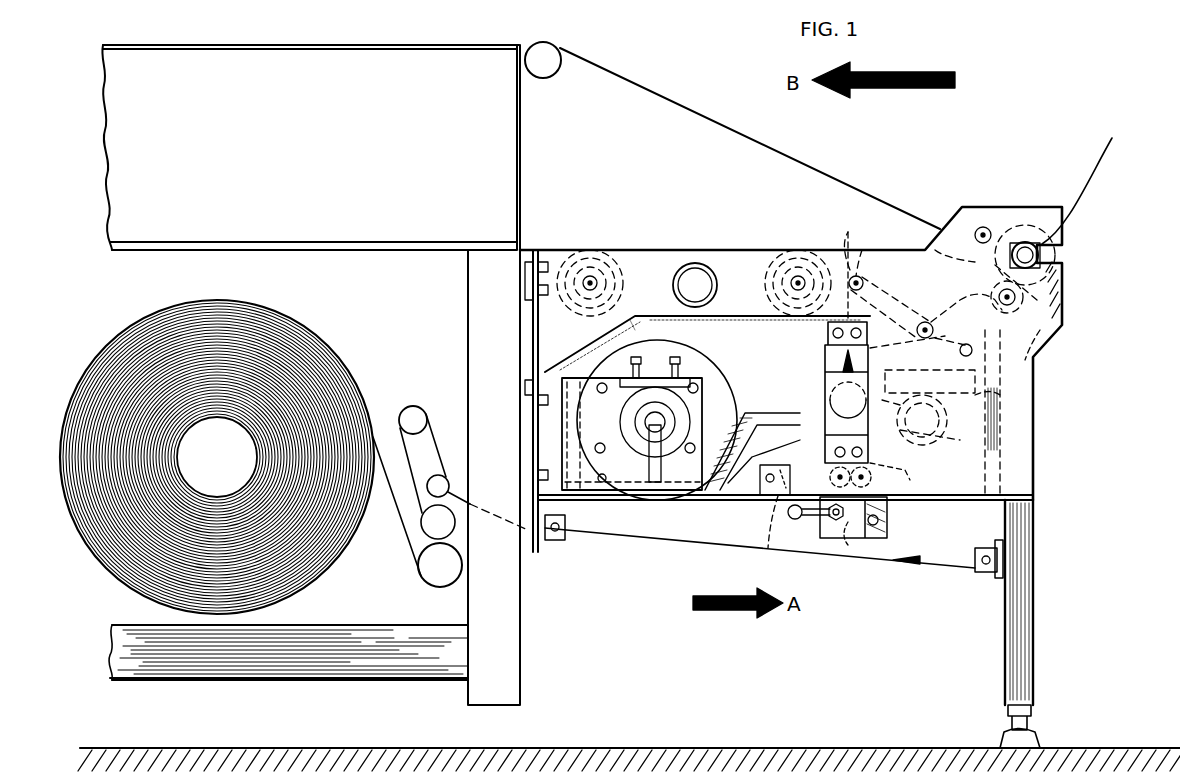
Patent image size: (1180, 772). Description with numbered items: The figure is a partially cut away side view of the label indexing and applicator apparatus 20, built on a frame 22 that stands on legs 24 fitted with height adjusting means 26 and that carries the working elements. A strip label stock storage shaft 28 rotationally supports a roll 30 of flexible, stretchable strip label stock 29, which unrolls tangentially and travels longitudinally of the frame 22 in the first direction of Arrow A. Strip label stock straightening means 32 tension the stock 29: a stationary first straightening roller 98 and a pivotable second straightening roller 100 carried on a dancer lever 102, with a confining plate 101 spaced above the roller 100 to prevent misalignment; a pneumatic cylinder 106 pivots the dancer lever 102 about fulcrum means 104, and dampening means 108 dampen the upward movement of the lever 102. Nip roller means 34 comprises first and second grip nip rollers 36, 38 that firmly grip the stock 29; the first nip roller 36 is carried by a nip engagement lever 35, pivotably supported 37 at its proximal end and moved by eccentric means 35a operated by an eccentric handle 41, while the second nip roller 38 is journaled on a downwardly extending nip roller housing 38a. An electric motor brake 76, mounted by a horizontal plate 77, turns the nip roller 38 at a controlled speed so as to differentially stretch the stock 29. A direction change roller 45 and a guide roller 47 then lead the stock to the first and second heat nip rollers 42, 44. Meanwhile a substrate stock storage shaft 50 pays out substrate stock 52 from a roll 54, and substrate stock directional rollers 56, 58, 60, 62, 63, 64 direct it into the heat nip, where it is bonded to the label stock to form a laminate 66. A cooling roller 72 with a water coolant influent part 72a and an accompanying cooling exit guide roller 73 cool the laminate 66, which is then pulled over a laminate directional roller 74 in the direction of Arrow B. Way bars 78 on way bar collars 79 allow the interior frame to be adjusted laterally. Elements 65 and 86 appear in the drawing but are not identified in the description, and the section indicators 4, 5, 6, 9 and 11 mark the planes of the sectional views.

The label indexing and applicator apparatus 20 is at (1080, 522).
The frame 22 is at (1065, 293).
The legs 24 is at (1034, 612).
The height adjusting means 26 is at (1040, 730).
The strip label stock storage shaft 28 is at (668, 425).
The strip label stock 29 is at (745, 492).
The roll of strip label stock 30 is at (636, 345).
The strip label stock straightening means 32 is at (787, 406).
The nip roller means 34 is at (898, 496).
The nip engagement lever 35 is at (877, 545).
The eccentric means 35a is at (845, 530).
The first grip nip roller 36 is at (788, 521).
The pivot support 37 is at (890, 560).
The second grip nip roller 38 is at (905, 470).
The nip roller housing 38a is at (850, 546).
The eccentric handle 41 is at (828, 532).
The first heat nip roller 42 is at (953, 308).
The second heat nip roller 44 is at (1062, 270).
The direction change roller 45 is at (862, 250).
The guide roller 47 is at (888, 285).
The substrate stock storage shaft 50 is at (205, 430).
The substrate stock 52 is at (392, 506).
The roll of substrate stock 54 is at (327, 571).
The substrate stock directional roller 56 is at (432, 570).
The substrate stock directional roller 58 is at (447, 522).
The substrate stock directional roller 60 is at (411, 418).
The substrate stock directional roller 62 is at (437, 483).
The substrate stock directional roller 63 is at (566, 541).
The substrate stock directional roller 64 is at (1036, 569).
The guide 65 is at (1066, 331).
The laminate 66 is at (828, 173).
The cooling roller 72 is at (1062, 248).
The water coolant influent part 72a is at (1099, 182).
The cooling exit guide roller 73 is at (1002, 204).
The laminate directional roller 74 is at (552, 63).
The electric motor brake 76 is at (985, 446).
The horizontal plate 77 is at (985, 401).
The way bars 78 is at (590, 276).
The way bar collars 79 is at (610, 262).
The roller 86 is at (700, 263).
The first straightening roller 98 is at (775, 497).
The second straightening roller 100 is at (794, 467).
The confining plate 101 is at (707, 344).
The dancer lever 102 is at (700, 492).
The fulcrum means 104 is at (603, 483).
The pneumatic cylinder 106 is at (533, 386).
The dampening means 108 is at (700, 363).
The section line 4- 4 is at (593, 167).
The section line 5- 5 is at (818, 406).
The section line 6- 6 is at (993, 193).
The section line 9- 9 is at (966, 212).
The section line 11- 11 is at (588, 347).